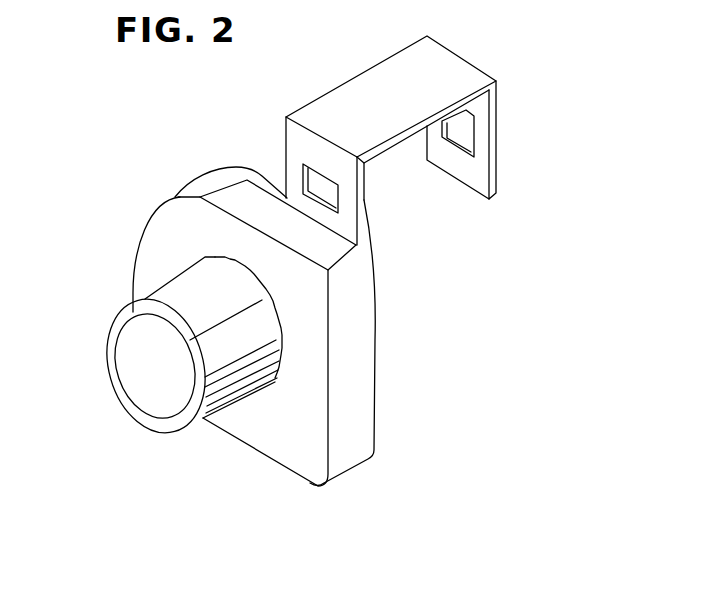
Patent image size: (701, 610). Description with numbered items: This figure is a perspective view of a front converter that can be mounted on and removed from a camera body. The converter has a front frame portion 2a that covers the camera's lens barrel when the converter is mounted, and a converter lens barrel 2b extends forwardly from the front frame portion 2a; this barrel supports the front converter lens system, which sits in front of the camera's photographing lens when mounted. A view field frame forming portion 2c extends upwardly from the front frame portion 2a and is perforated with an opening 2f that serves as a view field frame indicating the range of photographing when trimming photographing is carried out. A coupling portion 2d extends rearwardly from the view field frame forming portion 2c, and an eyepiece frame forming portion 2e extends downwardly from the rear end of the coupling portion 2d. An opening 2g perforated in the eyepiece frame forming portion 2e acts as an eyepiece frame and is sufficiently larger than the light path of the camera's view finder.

The front frame portion 2a is at (143, 223).
The converter lens barrel 2b is at (233, 398).
The view field frame forming portion 2c is at (287, 153).
The coupling portion 2d is at (356, 78).
The eyepiece frame forming portion 2e is at (497, 103).
The opening 2f is at (326, 196).
The opening 2g is at (462, 128).